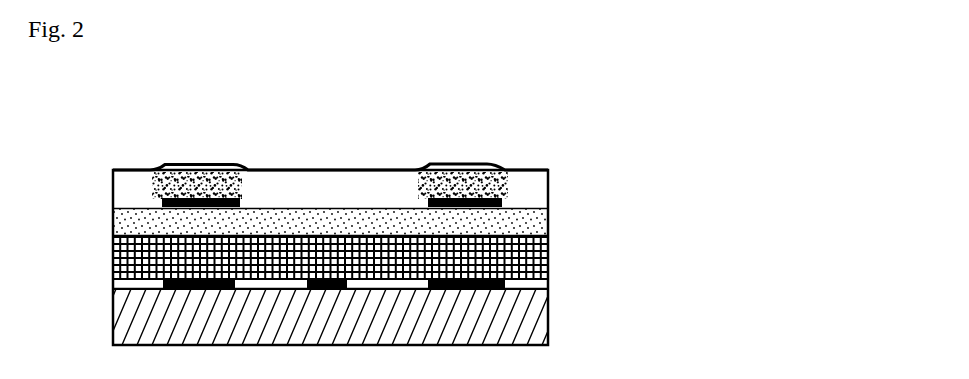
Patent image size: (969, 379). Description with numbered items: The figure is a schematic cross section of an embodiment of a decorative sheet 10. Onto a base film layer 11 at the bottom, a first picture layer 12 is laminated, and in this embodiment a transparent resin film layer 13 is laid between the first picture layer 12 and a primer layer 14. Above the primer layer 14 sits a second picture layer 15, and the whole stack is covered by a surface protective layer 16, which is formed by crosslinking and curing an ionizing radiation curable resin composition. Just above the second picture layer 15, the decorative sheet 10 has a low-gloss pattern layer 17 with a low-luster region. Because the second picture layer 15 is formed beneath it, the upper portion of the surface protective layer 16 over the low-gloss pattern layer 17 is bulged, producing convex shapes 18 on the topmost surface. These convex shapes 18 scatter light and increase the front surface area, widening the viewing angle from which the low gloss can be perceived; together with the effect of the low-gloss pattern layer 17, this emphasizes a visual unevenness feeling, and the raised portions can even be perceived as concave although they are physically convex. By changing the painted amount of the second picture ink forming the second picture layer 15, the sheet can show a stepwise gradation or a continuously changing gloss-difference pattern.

The decorative sheet 10 is at (423, 126).
The base film layer 11 is at (518, 309).
The first picture layer 12 is at (530, 282).
The transparent resin film layer 13 is at (527, 264).
The primer layer 14 is at (525, 230).
The second picture layer 15 is at (242, 200).
The surface protective layer 16 is at (527, 198).
The low-gloss pattern layer 17 is at (177, 169).
The convex shapes 18 is at (466, 165).